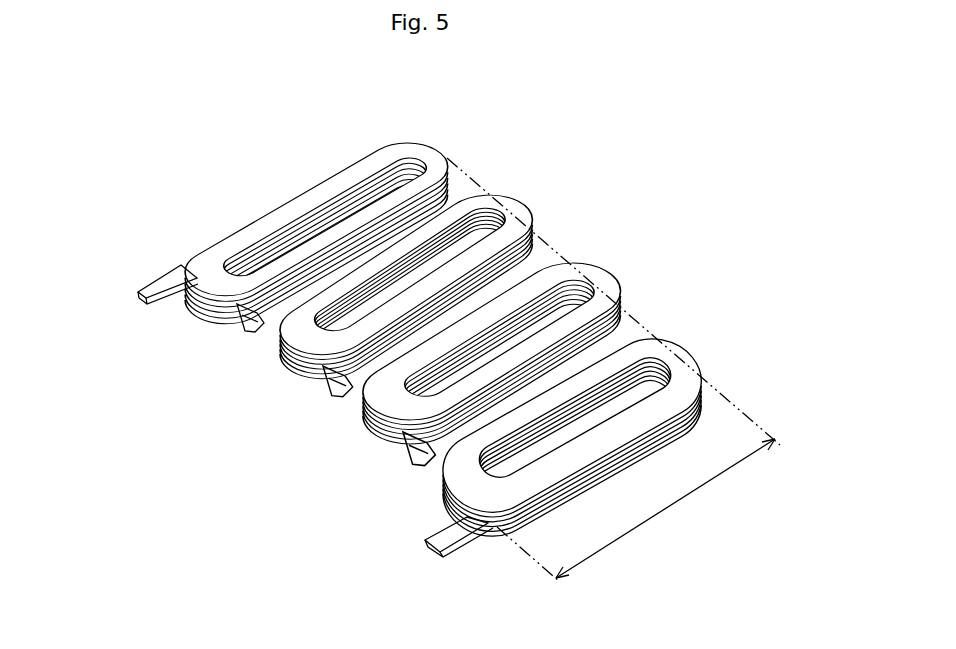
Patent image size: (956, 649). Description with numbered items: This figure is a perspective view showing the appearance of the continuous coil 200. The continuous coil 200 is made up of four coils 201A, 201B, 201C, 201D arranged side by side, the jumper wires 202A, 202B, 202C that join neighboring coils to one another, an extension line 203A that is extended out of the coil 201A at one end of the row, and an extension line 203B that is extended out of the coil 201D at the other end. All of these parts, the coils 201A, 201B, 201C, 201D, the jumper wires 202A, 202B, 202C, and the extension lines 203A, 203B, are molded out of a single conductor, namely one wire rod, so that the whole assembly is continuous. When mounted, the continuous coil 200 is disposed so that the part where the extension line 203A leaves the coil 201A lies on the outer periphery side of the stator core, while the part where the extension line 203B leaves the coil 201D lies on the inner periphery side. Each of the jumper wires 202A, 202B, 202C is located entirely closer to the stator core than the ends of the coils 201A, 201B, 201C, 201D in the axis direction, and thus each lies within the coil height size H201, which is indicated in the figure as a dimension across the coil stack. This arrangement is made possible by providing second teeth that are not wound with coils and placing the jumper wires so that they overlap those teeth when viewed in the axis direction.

The continuous coil 200 is at (234, 162).
The coil 201A is at (445, 157).
The coil 201B is at (528, 209).
The coil 201C is at (613, 280).
The coil 201D is at (693, 358).
The jumper wire 202A is at (241, 318).
The jumper wire 202B is at (331, 388).
The jumper wire 202C is at (411, 448).
The extension line 203A is at (157, 278).
The extension line 203B is at (430, 553).
The coil height size H201 is at (613, 370).